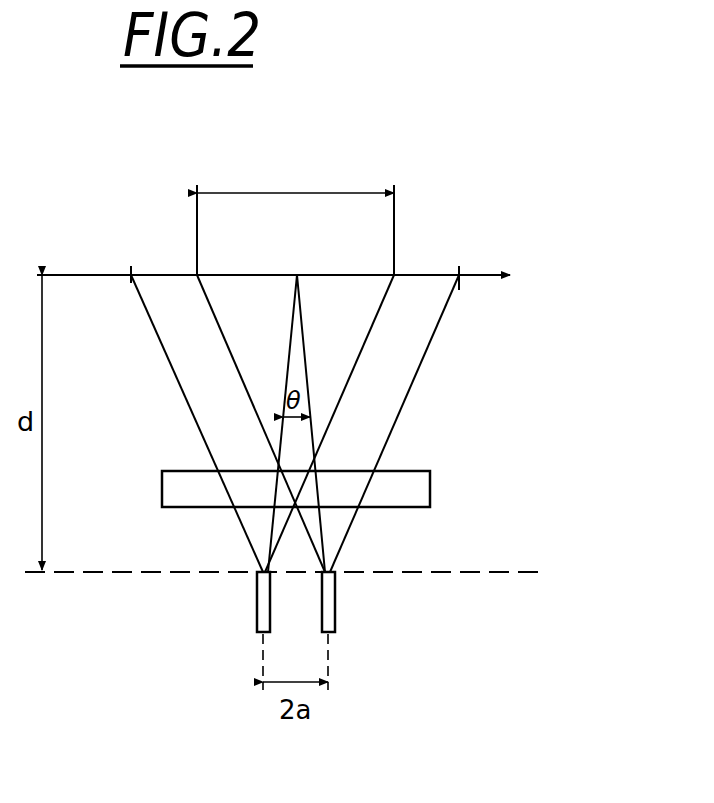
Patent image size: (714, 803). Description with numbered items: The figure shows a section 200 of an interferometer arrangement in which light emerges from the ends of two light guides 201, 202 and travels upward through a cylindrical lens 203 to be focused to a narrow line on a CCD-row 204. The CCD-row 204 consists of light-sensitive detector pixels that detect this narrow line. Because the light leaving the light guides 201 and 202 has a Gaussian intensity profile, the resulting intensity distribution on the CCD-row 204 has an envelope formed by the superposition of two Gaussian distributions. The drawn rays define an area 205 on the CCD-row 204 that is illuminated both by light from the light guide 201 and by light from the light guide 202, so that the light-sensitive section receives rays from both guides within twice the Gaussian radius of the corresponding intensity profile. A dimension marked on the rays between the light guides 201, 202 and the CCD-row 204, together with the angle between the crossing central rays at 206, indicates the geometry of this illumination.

The section of the interferometer arrangement 200 is at (534, 298).
The light guide 201 is at (257, 618).
The light guide 202 is at (335, 612).
The cylindrical lens 203 is at (425, 491).
The CCD-row 204 is at (441, 275).
The area on the CCD-row 205 is at (215, 272).
The center scan position 206 is at (297, 275).